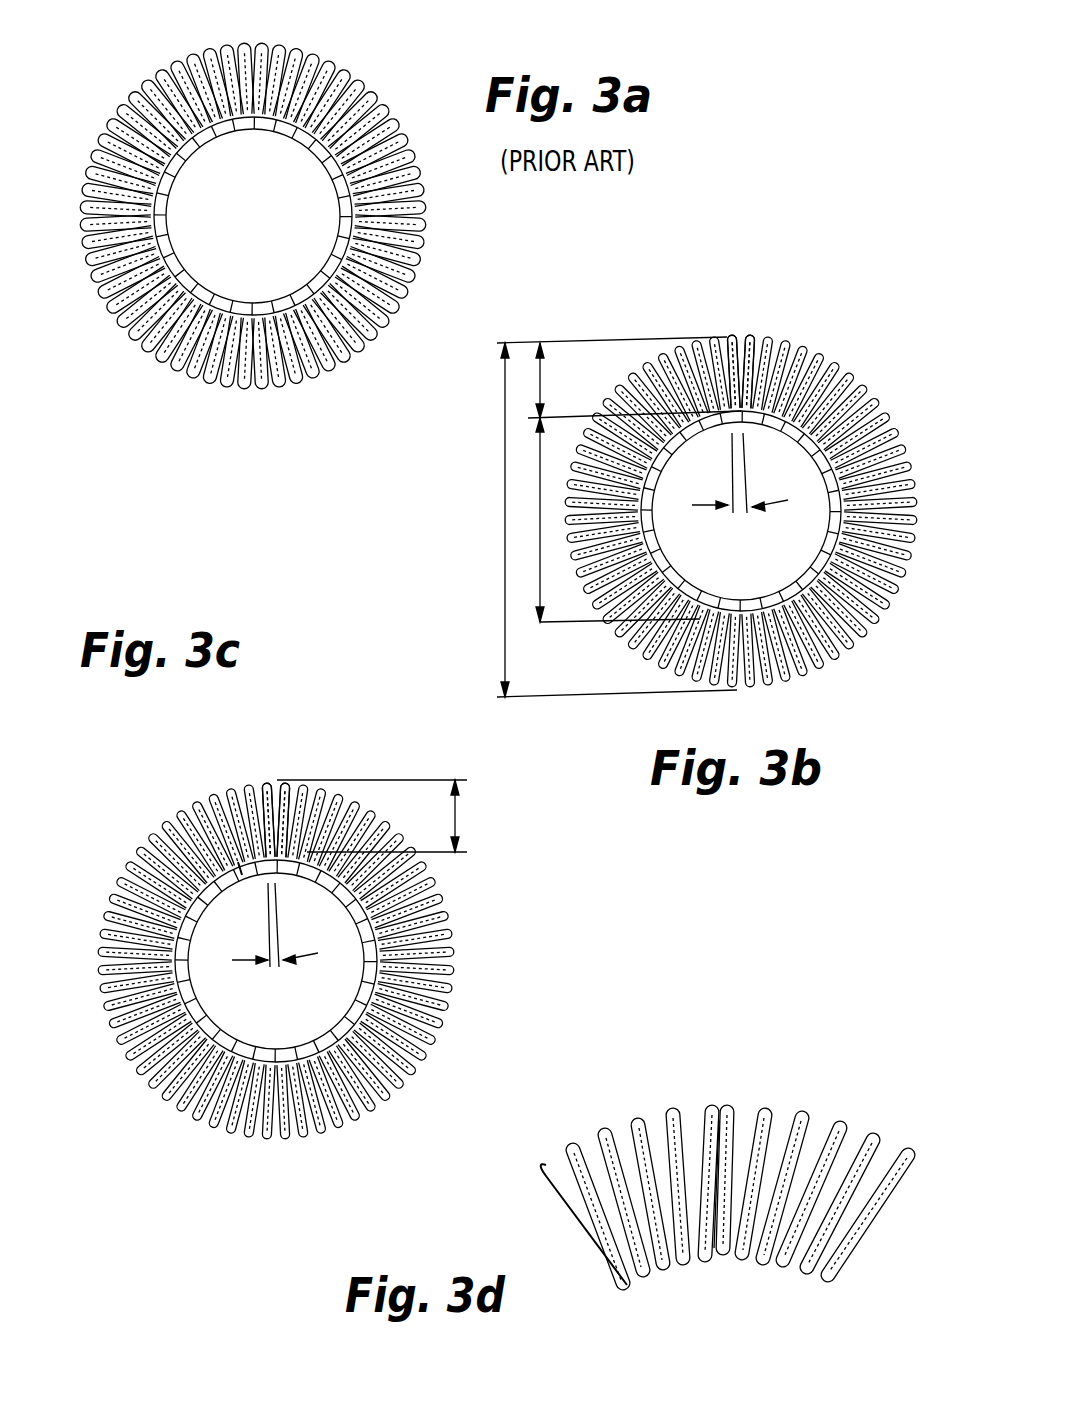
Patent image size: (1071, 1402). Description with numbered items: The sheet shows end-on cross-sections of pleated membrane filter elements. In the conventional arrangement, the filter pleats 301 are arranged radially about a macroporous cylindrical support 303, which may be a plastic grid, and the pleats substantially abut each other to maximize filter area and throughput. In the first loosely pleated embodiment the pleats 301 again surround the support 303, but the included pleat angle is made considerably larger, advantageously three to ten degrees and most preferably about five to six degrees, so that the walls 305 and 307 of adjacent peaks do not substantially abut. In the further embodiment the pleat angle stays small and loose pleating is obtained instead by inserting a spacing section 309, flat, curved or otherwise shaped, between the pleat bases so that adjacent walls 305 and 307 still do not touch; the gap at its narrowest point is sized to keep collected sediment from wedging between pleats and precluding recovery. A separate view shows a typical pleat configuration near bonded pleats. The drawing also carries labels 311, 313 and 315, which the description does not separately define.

In FIG. 3A, the filter pleats 301 is at (232, 45).
In FIG. 3B, the filter pleats 301 is at (765, 343).
In FIG. 3C, the filter pleats 301 is at (215, 795).
In FIG. 3D, the filter pleats 301 is at (673, 1115).
In FIG. 3A, the macroporous cylindrical support 303 is at (298, 143).
In FIG. 3B, the macroporous cylindrical support 303 is at (833, 523).
In FIG. 3C, the macroporous cylindrical support 303 is at (363, 970).
In FIG. 3B, the pleat wall 305 is at (737, 362).
In FIG. 3C, the pleat wall 305 is at (263, 815).
In FIG. 3B, the pleat wall 307 is at (752, 360).
In FIG. 3C, the pleat wall 307 is at (261, 800).
In FIG. 3C, the spacing section 309 is at (240, 875).
In FIG. 3B, the loop tip offset distance 311 is at (540, 383).
In FIG. 3C, the loop tip offset distance 311 is at (447, 815).
In FIG. 3D, the adjacent contacting bristle loops 313 is at (710, 1107).
In FIG. 3D, the contact point between adjacent loops 315 is at (720, 1108).